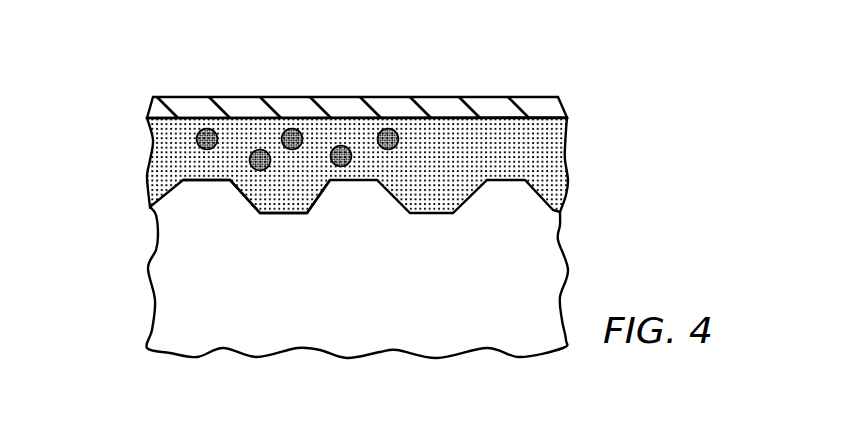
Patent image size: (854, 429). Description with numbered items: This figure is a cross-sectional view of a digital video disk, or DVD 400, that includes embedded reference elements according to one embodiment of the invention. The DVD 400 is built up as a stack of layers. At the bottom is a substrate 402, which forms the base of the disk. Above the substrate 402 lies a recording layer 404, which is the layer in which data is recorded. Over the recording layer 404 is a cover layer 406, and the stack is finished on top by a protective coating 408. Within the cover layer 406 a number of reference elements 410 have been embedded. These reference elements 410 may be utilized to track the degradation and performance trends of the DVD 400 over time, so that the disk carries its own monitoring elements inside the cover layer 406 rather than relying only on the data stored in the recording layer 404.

The digital video disk (DVD) 400 is at (119, 232).
The substrate 402 is at (377, 296).
The recording layer 404 is at (207, 184).
The cover layer 406 is at (566, 157).
The protective coating 408 is at (148, 106).
The reference elements 410 is at (207, 128).